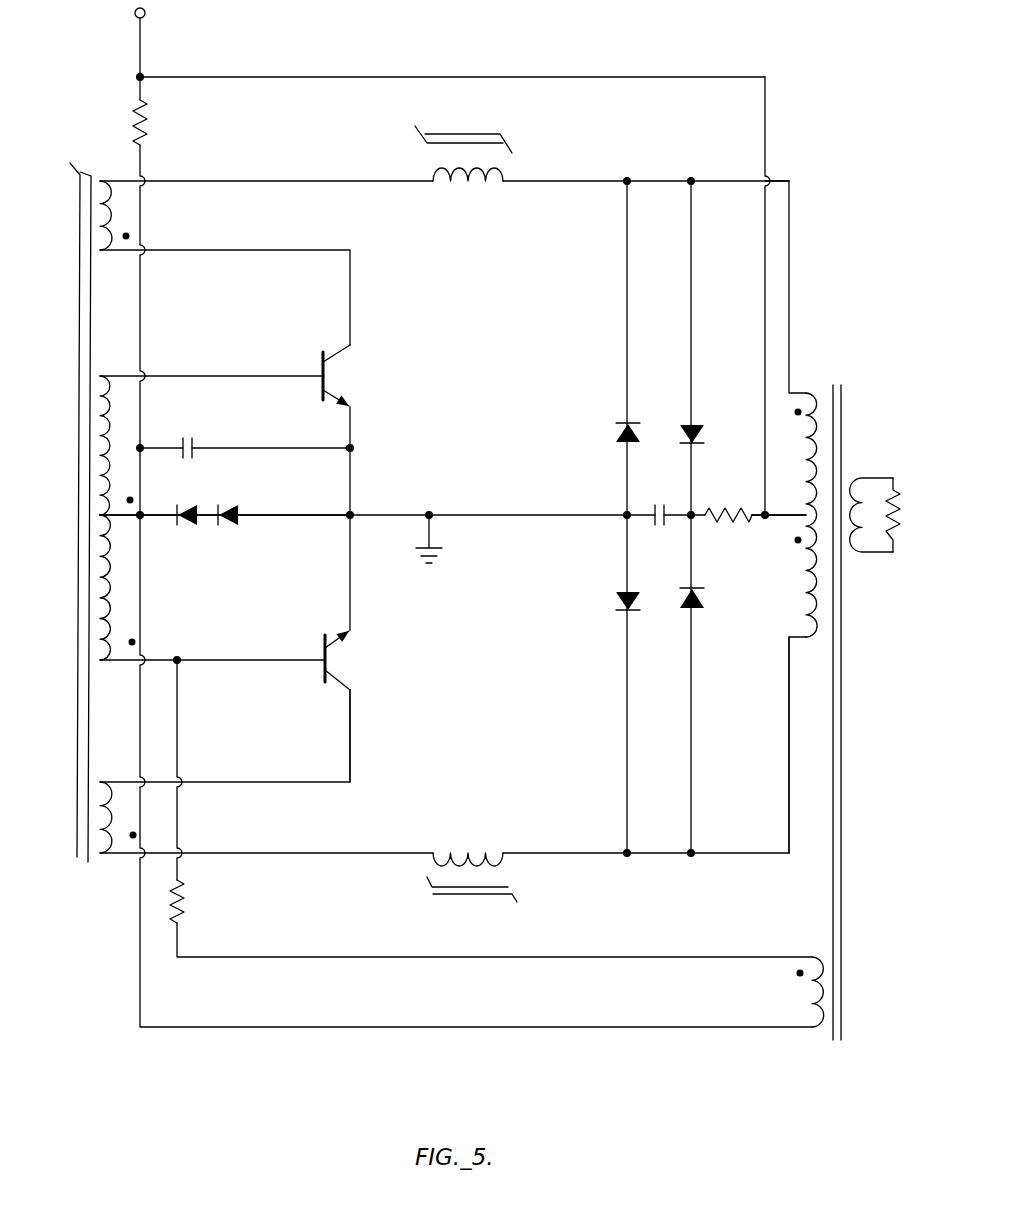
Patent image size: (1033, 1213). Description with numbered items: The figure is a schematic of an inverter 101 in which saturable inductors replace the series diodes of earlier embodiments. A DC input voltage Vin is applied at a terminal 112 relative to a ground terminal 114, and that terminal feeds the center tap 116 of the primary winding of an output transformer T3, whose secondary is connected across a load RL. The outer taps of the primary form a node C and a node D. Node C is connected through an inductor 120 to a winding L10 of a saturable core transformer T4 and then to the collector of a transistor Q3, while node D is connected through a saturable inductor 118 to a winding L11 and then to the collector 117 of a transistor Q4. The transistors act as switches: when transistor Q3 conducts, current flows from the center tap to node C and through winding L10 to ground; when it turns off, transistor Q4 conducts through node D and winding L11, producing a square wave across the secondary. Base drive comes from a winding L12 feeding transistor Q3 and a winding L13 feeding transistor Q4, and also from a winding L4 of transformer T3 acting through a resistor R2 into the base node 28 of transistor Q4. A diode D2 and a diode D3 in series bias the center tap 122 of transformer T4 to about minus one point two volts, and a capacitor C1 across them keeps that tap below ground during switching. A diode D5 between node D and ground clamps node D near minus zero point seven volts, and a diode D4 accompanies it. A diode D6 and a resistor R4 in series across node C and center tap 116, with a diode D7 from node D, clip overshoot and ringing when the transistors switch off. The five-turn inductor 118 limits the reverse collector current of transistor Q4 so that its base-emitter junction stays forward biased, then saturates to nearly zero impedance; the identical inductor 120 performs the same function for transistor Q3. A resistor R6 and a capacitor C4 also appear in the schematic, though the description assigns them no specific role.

The inverter 101 is at (764, 49).
The terminal 112 is at (141, 36).
The resistor R6 is at (147, 125).
The saturable core transformer T4 is at (75, 693).
The winding L10 is at (100, 208).
The winding L12 is at (100, 397).
The winding L13 is at (100, 600).
The winding L11 is at (100, 786).
The center tap 122 is at (110, 502).
The capacitor C1 is at (197, 420).
The diode D2 is at (183, 505).
The diode D3 is at (232, 505).
The transistor Q3 is at (336, 379).
The transistor Q4 is at (340, 665).
The node 28 is at (302, 662).
The collector 117 is at (352, 737).
The ground terminal 114 is at (432, 530).
The inductor 120 is at (470, 168).
The saturable inductor 118 is at (478, 862).
The node C is at (790, 181).
The diode D4 is at (628, 420).
The diode D6 is at (692, 420).
The diode D5 is at (630, 590).
The diode D7 is at (696, 590).
The capacitor C4 is at (656, 485).
The resistor R4 is at (718, 505).
The center tap 116 is at (804, 517).
The output transformer T3 is at (845, 727).
The load RL is at (897, 515).
The node D is at (789, 853).
The winding L4 is at (828, 999).
The resistor R2 is at (183, 905).